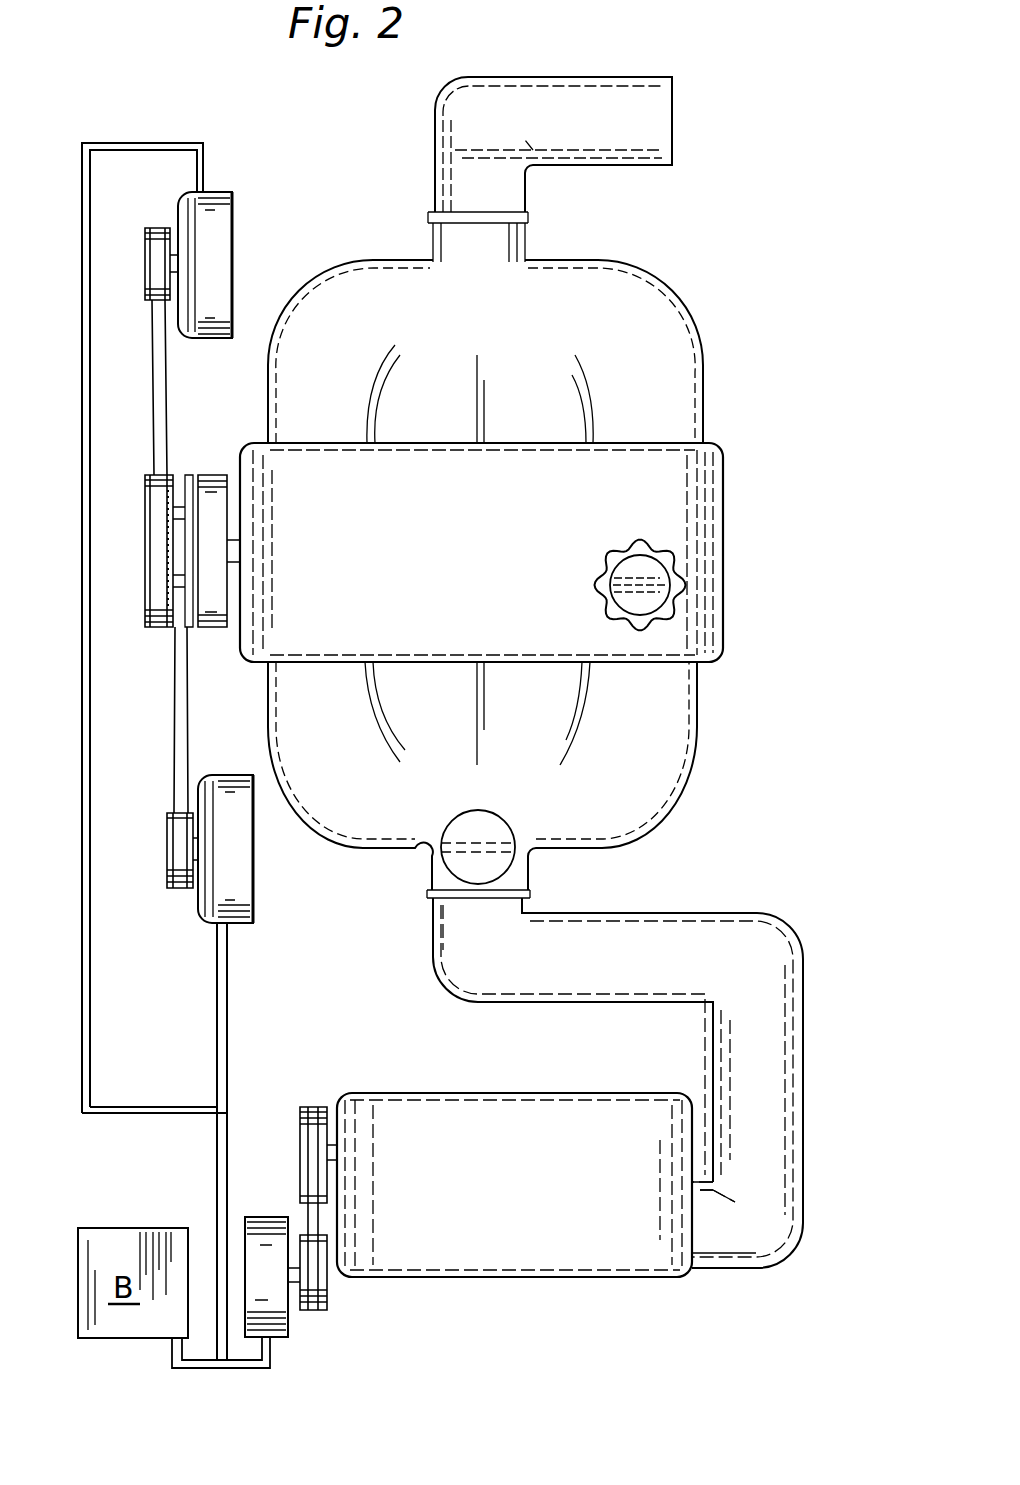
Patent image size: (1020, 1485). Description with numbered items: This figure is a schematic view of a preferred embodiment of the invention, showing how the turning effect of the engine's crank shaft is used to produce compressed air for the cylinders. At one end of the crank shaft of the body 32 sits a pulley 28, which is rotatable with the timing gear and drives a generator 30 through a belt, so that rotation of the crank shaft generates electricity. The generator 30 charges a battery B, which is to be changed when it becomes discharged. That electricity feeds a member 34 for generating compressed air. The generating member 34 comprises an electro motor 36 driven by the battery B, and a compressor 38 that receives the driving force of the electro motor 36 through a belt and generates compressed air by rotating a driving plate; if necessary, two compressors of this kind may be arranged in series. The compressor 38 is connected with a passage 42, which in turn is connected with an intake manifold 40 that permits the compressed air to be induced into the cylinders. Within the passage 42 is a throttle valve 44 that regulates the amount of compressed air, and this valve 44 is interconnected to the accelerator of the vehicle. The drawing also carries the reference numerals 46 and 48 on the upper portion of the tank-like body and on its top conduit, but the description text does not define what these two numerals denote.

The pulley 28 is at (147, 628).
The generator 30 is at (222, 227).
The body 32 is at (480, 558).
The member for generating compressed air 34 is at (485, 1287).
The electro motor 36 is at (290, 1317).
The compressor 38 is at (645, 1256).
The intake manifold 40 is at (645, 733).
The passage 42 is at (763, 957).
The throttle valve 44 is at (447, 865).
The upper tank portion 46 is at (652, 342).
The inlet conduit 48 is at (646, 125).